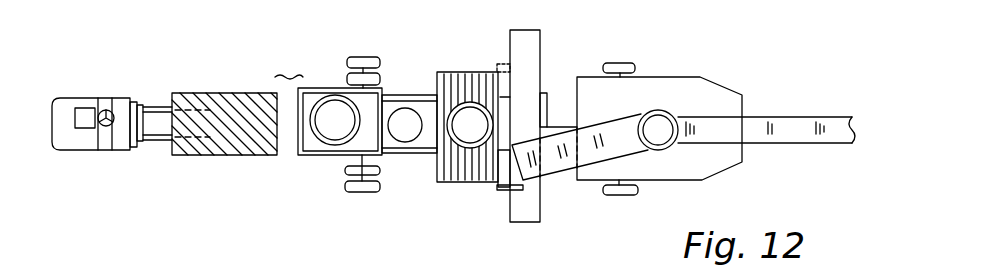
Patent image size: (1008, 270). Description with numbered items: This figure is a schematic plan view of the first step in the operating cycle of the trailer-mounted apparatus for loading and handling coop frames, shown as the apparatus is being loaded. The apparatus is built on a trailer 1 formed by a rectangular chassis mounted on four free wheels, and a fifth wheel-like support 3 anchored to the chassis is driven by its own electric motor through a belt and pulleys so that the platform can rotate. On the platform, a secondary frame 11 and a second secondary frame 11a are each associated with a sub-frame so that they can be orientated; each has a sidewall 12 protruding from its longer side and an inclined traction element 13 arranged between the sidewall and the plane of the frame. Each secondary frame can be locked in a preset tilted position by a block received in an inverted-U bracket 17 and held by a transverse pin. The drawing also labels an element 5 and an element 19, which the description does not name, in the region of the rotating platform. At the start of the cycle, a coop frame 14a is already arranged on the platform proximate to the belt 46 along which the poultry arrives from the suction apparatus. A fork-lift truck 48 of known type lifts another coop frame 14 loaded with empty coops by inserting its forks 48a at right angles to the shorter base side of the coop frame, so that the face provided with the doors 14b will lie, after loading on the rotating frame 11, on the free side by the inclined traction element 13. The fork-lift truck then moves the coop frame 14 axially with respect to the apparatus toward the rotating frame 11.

The fork-lift truck 48 is at (65, 103).
The forks 48a is at (155, 143).
The coop frame 14 is at (247, 100).
The doors 14b is at (247, 155).
The sidewall 12 is at (382, 107).
The secondary frame 11 is at (308, 158).
The inclined traction element 13 is at (334, 158).
The fifth wheel-like support 3 is at (405, 133).
The trailer 1 is at (423, 110).
The ribbed block 5 is at (490, 15).
The secondary frame 11a is at (437, 170).
The coop frame 14a is at (532, 111).
The bracket 19 is at (530, 63).
The bracket 17 is at (665, 82).
The belt 46 is at (587, 158).